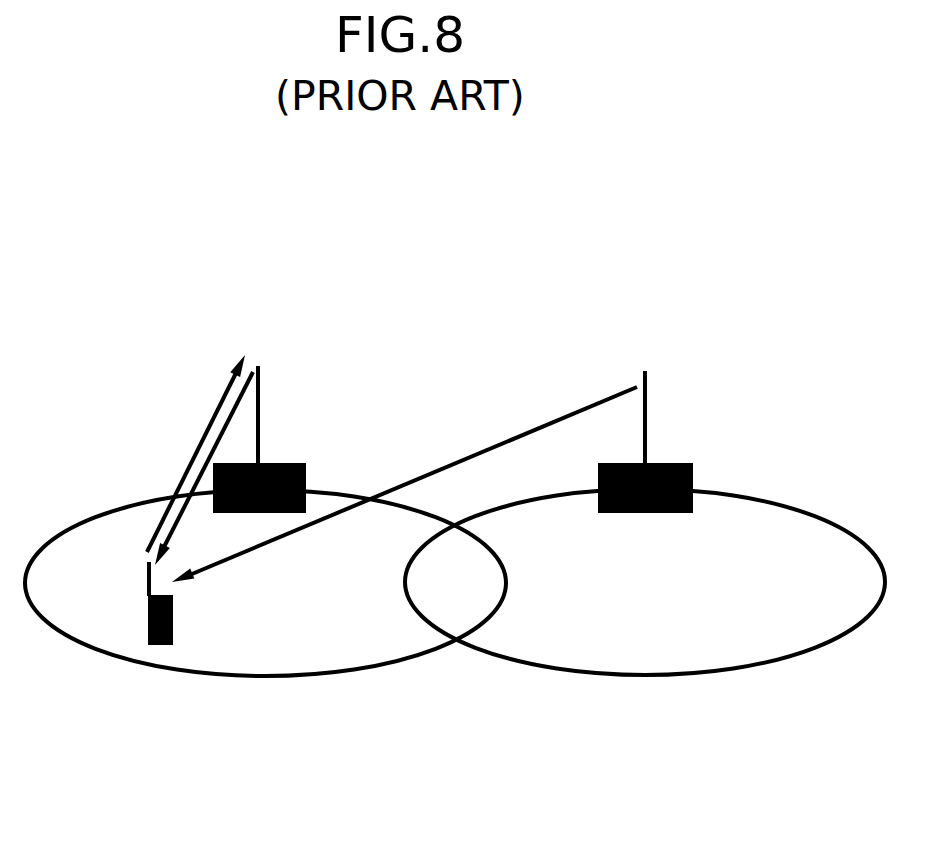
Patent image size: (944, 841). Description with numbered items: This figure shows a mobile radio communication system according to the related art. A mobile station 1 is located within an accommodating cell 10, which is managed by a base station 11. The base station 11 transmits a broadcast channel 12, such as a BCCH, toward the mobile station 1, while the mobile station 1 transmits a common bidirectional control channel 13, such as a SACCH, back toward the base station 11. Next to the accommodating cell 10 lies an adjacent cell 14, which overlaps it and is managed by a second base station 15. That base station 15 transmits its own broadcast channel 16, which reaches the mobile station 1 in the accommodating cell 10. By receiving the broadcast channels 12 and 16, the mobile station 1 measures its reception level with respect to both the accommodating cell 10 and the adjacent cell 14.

The mobile station 1 is at (153, 645).
The accommodating cell 10 is at (243, 678).
The base station 11 is at (258, 364).
The broadcast channel 12 is at (237, 417).
The common bidirectional control channel 13 is at (195, 453).
The adjacent cell 14 is at (642, 675).
The base station 15 is at (645, 370).
The broadcast channel 16 is at (452, 463).